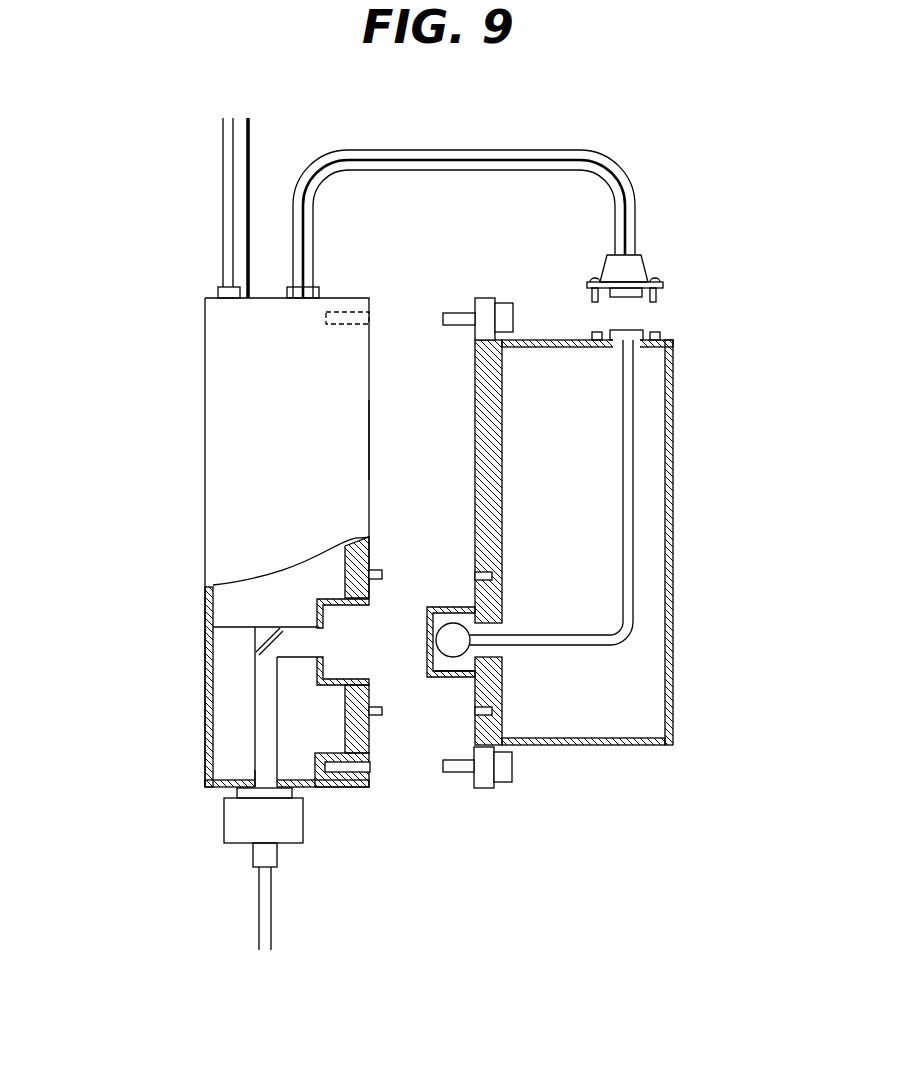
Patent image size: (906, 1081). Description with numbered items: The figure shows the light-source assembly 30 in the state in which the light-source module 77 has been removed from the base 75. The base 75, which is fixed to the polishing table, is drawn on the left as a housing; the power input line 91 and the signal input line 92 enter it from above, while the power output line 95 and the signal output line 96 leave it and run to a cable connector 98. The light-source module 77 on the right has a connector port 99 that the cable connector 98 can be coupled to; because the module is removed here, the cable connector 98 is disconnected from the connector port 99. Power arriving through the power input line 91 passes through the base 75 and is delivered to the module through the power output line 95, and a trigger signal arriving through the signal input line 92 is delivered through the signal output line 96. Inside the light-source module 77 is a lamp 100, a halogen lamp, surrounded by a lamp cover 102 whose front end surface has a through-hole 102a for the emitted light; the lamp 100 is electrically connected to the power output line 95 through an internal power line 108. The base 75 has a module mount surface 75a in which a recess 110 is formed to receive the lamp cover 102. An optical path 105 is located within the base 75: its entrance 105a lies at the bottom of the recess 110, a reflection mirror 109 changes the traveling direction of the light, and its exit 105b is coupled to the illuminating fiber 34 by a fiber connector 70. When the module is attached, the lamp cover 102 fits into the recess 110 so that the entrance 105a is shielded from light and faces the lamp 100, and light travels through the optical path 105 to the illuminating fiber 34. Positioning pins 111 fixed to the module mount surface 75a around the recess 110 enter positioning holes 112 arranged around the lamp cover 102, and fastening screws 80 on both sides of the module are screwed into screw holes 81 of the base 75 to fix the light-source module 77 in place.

The light-source assembly 30 is at (186, 362).
The illuminating fiber 34 is at (259, 905).
The fiber connector 70 is at (224, 822).
The base 75 is at (205, 490).
The module mount surface 75a is at (369, 440).
The light-source module 77 is at (673, 502).
The fastening screws 80 is at (513, 315).
The screw holes 81 is at (349, 312).
The power input line 91 is at (223, 195).
The signal input line 92 is at (250, 158).
The power output line 95 is at (430, 149).
The signal output line 96 is at (428, 172).
The cable connector 98 is at (647, 266).
The connector port 99 is at (633, 326).
The lamp 100 is at (436, 640).
The lamp cover 102 is at (450, 606).
The through-hole 102a is at (427, 655).
The optical path 105 is at (265, 692).
The entrance 105a is at (318, 640).
The exit 105b is at (263, 780).
The internal power line 108 is at (633, 567).
The reflection mirror 109 is at (253, 634).
The recess 110 is at (323, 618).
The positioning pins 111 is at (377, 570).
The positioning holes 112 is at (475, 575).